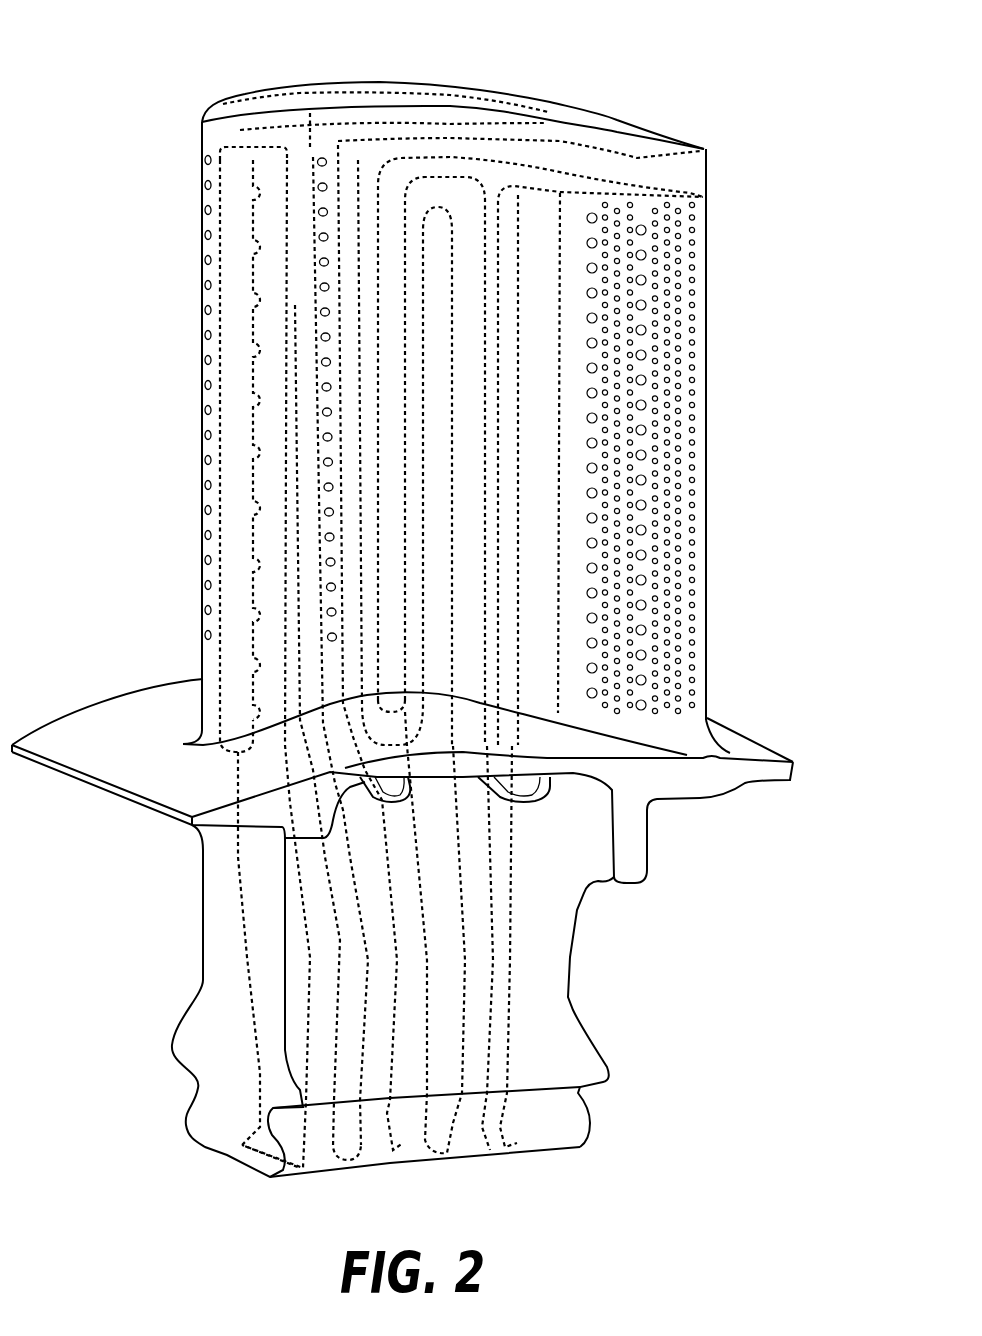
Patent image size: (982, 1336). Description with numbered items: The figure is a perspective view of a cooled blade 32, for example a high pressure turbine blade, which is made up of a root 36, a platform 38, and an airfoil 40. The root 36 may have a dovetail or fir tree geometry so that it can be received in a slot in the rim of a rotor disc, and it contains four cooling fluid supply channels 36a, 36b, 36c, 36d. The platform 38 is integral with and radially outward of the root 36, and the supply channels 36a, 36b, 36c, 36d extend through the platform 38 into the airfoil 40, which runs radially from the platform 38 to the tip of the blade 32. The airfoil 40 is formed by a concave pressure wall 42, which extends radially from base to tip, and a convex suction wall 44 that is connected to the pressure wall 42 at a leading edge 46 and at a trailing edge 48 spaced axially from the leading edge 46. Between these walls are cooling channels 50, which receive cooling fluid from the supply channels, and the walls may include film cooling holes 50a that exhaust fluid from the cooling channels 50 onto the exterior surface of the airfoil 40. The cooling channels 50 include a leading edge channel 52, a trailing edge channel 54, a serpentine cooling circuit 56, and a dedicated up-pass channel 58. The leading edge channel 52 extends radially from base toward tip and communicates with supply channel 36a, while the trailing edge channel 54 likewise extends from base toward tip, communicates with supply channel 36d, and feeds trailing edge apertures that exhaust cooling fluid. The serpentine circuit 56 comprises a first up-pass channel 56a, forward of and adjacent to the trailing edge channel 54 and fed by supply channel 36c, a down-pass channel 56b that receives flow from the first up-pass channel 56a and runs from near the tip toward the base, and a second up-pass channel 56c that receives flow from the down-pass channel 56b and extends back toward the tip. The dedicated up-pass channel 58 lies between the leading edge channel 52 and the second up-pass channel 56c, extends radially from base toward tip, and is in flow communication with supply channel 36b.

The cooled blade 32 is at (551, 90).
The root 36 is at (202, 915).
The cooling fluid supply channel 36a is at (327, 990).
The cooling fluid supply channel 36b is at (387, 980).
The cooling fluid supply channel 36c is at (448, 1016).
The cooling fluid supply channel 36d is at (500, 1047).
The platform 38 is at (797, 762).
The airfoil 40 is at (708, 444).
The concave pressure wall 42 is at (540, 303).
The convex suction wall 44 is at (288, 296).
The leading edge 46 is at (203, 390).
The trailing edge 48 is at (707, 530).
The cooling channels 50 is at (470, 250).
The film cooling holes 50a is at (322, 264).
The leading edge channel 52 is at (272, 538).
The trailing edge channel 54 is at (533, 612).
The serpentine cooling circuit 56 is at (483, 242).
The first up-pass channel 56a is at (473, 392).
The down-pass channel 56b is at (410, 482).
The second up-pass channel 56c is at (373, 580).
The dedicated up-pass channel 58 is at (297, 153).